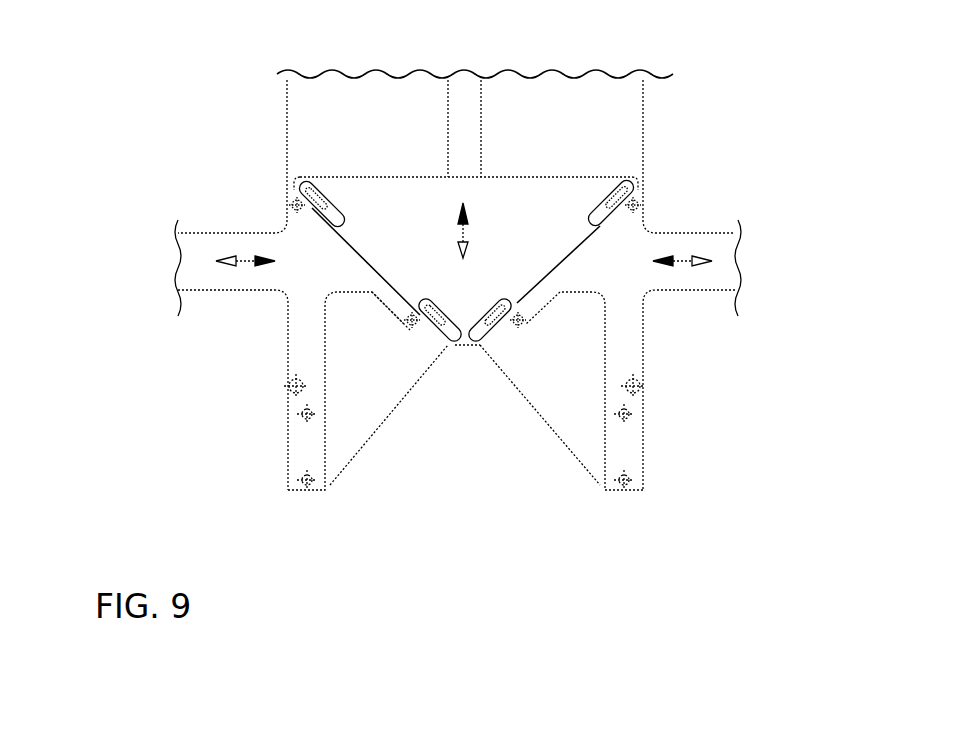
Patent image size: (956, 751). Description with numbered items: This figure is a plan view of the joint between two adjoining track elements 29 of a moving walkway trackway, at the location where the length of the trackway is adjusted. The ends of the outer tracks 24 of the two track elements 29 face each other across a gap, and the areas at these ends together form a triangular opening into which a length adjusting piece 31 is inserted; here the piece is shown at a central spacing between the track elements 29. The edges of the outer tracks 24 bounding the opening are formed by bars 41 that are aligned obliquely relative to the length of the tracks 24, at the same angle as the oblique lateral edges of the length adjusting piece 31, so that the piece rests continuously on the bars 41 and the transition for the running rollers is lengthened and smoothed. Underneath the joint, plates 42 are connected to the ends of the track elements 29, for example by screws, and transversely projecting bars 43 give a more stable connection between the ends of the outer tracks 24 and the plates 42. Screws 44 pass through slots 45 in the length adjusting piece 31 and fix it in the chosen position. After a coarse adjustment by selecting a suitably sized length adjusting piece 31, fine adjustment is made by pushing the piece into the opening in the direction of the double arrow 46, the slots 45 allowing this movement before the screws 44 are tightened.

The outer track 24 is at (680, 277).
The track element 29 is at (222, 333).
The length adjusting piece 31 is at (402, 233).
The bar 41 is at (393, 302).
The plate 42 is at (568, 360).
The bar 43 is at (305, 442).
The screw 44 is at (338, 226).
The slot 45 is at (312, 187).
The double arrow 46 is at (463, 245).